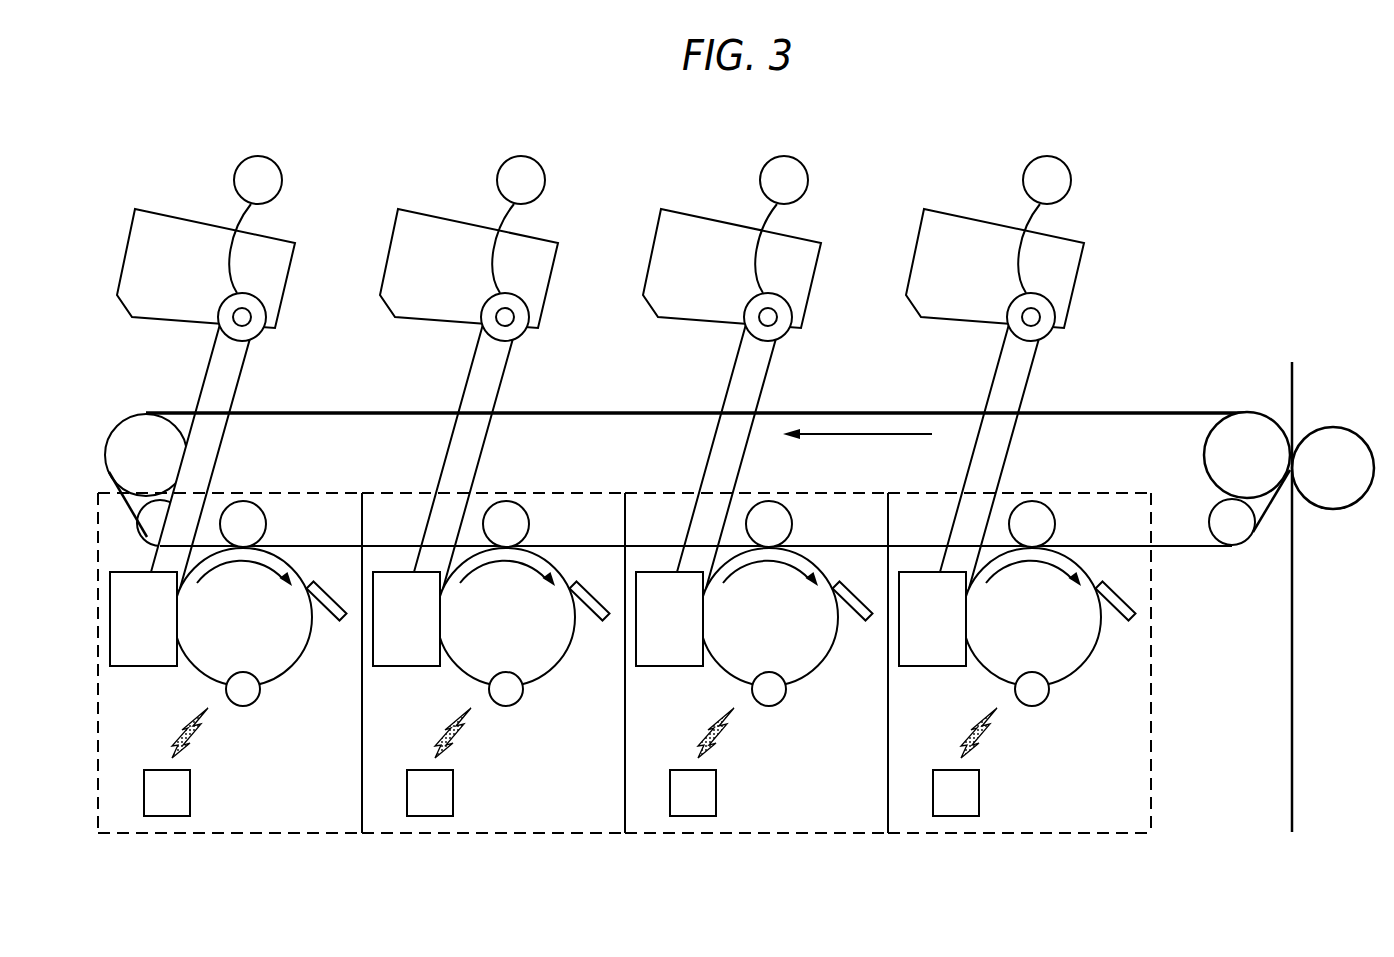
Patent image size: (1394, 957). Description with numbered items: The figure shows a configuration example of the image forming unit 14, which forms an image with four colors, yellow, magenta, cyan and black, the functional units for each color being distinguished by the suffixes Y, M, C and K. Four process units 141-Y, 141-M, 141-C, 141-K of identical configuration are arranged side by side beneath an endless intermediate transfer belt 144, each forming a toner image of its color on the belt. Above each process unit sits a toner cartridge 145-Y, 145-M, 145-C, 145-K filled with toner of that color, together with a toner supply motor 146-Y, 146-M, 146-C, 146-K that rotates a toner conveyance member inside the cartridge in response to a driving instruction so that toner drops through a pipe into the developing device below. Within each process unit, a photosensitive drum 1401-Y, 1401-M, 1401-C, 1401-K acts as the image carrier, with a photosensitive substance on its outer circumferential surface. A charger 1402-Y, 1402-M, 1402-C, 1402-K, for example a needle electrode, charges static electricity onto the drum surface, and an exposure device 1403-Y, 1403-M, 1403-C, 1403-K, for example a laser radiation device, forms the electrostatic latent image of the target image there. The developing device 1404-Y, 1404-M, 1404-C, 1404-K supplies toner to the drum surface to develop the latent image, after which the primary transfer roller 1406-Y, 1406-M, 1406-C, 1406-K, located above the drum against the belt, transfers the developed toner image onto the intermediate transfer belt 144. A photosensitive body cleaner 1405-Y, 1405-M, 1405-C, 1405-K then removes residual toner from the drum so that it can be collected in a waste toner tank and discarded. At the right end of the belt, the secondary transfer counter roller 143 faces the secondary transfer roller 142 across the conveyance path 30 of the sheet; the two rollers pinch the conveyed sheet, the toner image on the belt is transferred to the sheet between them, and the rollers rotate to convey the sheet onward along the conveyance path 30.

The image forming unit 14 is at (1167, 152).
The conveyance path 30 is at (1292, 595).
The secondary transfer roller 142 is at (1331, 427).
The secondary transfer counter roller 143 is at (1204, 456).
The intermediate transfer belt 144 is at (1160, 410).
The processing unit 141-Y is at (245, 833).
The processing unit 141-M is at (508, 833).
The processing unit 141-C is at (771, 833).
The processing unit 141-K is at (1034, 833).
The toner cartridge 145-Y is at (183, 219).
The toner cartridge 145-M is at (446, 219).
The toner cartridge 145-C is at (709, 219).
The toner cartridge 145-K is at (972, 219).
The toner supply motor 146-Y is at (239, 166).
The toner supply motor 146-M is at (502, 166).
The toner supply motor 146-C is at (765, 166).
The toner supply motor 146-K is at (1028, 166).
The photosensitive drum 1401-Y is at (307, 650).
The photosensitive drum 1401-M is at (570, 650).
The photosensitive drum 1401-C is at (833, 650).
The photosensitive drum 1401-K is at (1096, 650).
The charger 1402-Y is at (243, 706).
The charger 1402-M is at (506, 706).
The charger 1402-C is at (769, 706).
The charger 1402-K is at (1032, 706).
The exposure device 1403-Y is at (190, 790).
The exposure device 1403-M is at (453, 790).
The exposure device 1403-C is at (716, 790).
The exposure device 1403-K is at (979, 790).
The developing device 1404-Y is at (143, 666).
The developing device 1404-M is at (406, 666).
The developing device 1404-C is at (669, 666).
The developing device 1404-K is at (932, 666).
The photosensitive body cleaner 1405-Y is at (330, 588).
The photosensitive body cleaner 1405-M is at (593, 588).
The photosensitive body cleaner 1405-C is at (856, 588).
The photosensitive body cleaner 1405-K is at (1119, 588).
The primary transfer roller 1406-Y is at (283, 478).
The primary transfer roller 1406-M is at (546, 478).
The primary transfer roller 1406-C is at (809, 478).
The primary transfer roller 1406-K is at (1072, 478).